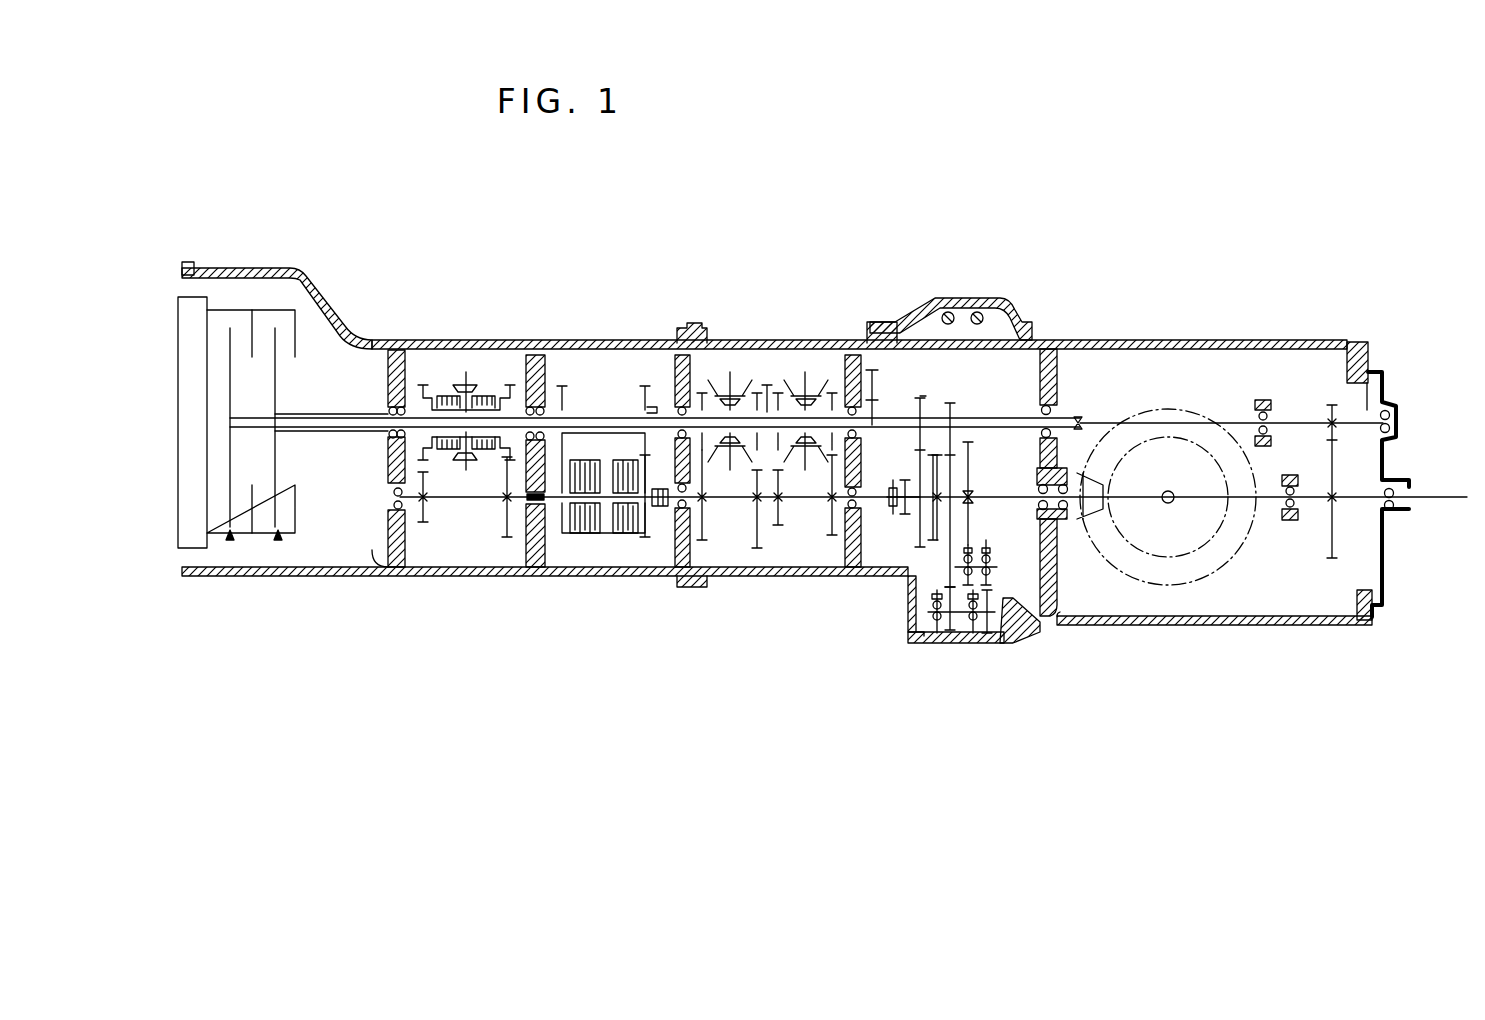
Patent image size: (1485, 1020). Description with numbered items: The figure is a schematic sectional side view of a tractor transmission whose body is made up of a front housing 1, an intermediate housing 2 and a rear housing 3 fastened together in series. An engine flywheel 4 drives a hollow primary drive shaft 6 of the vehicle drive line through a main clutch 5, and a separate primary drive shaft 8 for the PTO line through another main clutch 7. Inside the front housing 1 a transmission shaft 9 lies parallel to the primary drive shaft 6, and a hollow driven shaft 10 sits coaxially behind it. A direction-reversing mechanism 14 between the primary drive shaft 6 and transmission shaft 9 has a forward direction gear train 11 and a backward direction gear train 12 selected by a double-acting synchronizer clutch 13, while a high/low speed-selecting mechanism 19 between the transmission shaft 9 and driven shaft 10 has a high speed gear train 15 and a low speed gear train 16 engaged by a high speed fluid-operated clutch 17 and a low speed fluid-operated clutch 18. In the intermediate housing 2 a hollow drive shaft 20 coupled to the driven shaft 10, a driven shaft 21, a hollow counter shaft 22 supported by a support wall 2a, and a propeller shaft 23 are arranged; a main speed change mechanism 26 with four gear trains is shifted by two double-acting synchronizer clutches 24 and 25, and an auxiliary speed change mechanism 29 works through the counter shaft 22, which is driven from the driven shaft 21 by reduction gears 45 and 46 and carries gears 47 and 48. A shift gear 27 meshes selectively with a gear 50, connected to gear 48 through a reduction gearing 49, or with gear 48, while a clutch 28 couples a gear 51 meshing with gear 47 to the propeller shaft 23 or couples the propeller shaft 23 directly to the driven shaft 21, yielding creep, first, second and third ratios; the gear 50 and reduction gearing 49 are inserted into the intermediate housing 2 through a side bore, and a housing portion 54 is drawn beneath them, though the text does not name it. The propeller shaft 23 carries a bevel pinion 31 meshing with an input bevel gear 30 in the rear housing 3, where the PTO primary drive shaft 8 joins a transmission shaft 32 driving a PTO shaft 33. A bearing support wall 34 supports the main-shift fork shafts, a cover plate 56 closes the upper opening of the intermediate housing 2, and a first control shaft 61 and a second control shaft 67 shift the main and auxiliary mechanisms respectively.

The front housing 1 is at (355, 577).
The intermediate housing 2 is at (790, 577).
The support wall 2a is at (855, 343).
The rear housing 3 is at (1234, 626).
The engine flywheel 4 is at (196, 308).
The main clutch 5 is at (277, 540).
The primary drive shaft 6 is at (357, 417).
The main clutch 7 is at (230, 543).
The primary drive shaft 8 is at (353, 423).
The transmission shaft 9 is at (536, 567).
The driven shaft 10 is at (610, 418).
The forward direction gear train 11 is at (507, 545).
The backward direction gear train 12 is at (428, 532).
The double-acting synchronizer clutch 13 is at (447, 384).
The direction-reversing mechanism 14 is at (467, 522).
The high speed gear train 15 is at (646, 545).
The low speed gear train 16 is at (567, 545).
The high speed fluid-operated clutch 17 is at (625, 545).
The low speed fluid-operated clutch 18 is at (588, 470).
The high/low speed-selecting mechanism 19 is at (580, 406).
The drive shaft 20 is at (770, 410).
The driven shaft 21 is at (790, 502).
The counter shaft 22 is at (1013, 417).
The propeller shaft 23 is at (1055, 545).
The double-acting synchronizer clutch 24 is at (712, 373).
The double-acting synchronizer clutch 25 is at (822, 373).
The main speed change mechanism 26 is at (746, 549).
The shift gear 27 is at (968, 460).
The clutch 28 is at (860, 575).
The auxiliary speed change mechanism 29 is at (927, 376).
The input bevel gear 30 is at (1235, 553).
The bevel pinion 31 is at (1095, 517).
The transmission shaft 32 is at (1293, 410).
The PTO shaft 33 is at (1362, 502).
The bearing support wall 34 is at (653, 410).
The gear 45 is at (838, 538).
The gear 46 is at (872, 368).
The gear 47 is at (915, 372).
The gear 48 is at (949, 404).
The reduction gearing 49 is at (1000, 600).
The gear 50 is at (962, 640).
The gear 51 is at (928, 570).
The housing bottom 54 is at (905, 622).
The cover plate 56 is at (985, 299).
The first control shaft 61 is at (950, 312).
The second control shaft 67 is at (1010, 320).